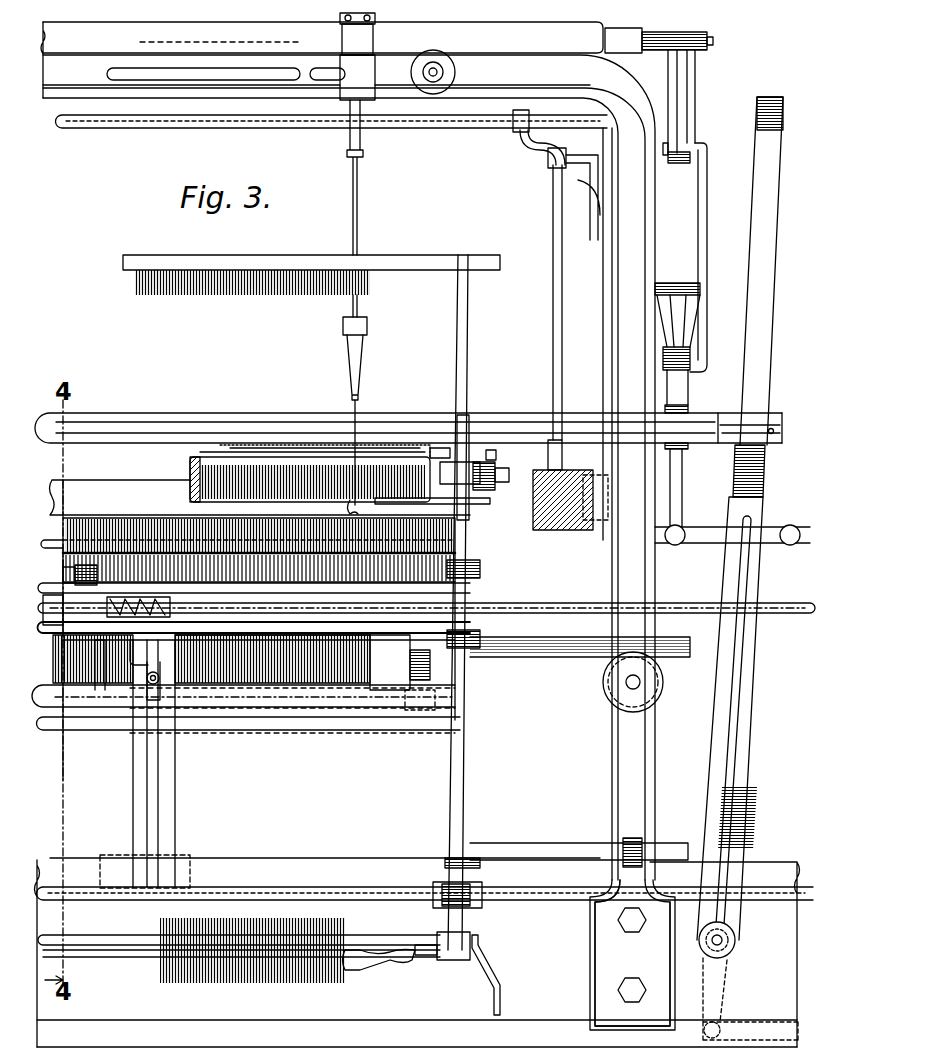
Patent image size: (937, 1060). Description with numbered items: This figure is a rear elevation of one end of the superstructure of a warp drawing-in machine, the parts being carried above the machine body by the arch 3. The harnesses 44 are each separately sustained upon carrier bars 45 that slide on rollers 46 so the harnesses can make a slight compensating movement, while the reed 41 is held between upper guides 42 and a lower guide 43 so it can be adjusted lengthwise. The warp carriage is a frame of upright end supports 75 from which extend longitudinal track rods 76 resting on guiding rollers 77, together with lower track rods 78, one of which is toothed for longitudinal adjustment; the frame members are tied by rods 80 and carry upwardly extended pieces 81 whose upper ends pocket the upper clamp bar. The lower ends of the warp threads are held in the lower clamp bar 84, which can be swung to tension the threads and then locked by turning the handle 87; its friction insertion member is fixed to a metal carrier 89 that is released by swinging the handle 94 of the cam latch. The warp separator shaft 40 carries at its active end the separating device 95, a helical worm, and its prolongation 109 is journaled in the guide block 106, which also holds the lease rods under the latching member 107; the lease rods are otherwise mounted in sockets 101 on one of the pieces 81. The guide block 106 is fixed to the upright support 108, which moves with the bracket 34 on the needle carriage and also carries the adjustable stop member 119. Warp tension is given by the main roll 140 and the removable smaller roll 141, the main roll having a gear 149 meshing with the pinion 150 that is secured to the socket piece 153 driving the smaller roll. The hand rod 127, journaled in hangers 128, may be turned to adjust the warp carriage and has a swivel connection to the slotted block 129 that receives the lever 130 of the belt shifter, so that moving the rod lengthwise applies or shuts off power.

The arch 3 is at (120, 83).
The supporting arm or bracket 34 is at (190, 860).
The warp separator shaft 40 is at (570, 605).
The reed 41 is at (350, 675).
The upper guides 42 is at (290, 605).
The lower guide 43 is at (355, 695).
The harnesses 44 is at (440, 532).
The carrier bars 45 is at (545, 40).
The rollers 46 is at (447, 85).
The upright end supports 75 is at (465, 757).
The longitudinal track rods 76 is at (555, 655).
The guiding rollers 77 is at (665, 680).
The lower track rods 78 is at (550, 845).
The rods 80 is at (297, 730).
The upwardly extended pieces 81 is at (470, 575).
The lower clamp bar 84 is at (365, 940).
The handle 87 is at (500, 1000).
The metal carrier 89 is at (100, 955).
The handle of cam latch 94 is at (360, 965).
The separating device 95 is at (170, 525).
The sockets 101 is at (470, 592).
The guide block 106 is at (97, 690).
The latching member 107 is at (115, 590).
The upright support 108 is at (175, 762).
The prolongation 109 is at (68, 592).
The stop member 119 is at (148, 665).
The hand rod 127 is at (195, 428).
The hangers 128 is at (688, 392).
The block 129 is at (782, 425).
The lever 130 is at (765, 375).
The main roll 140 is at (265, 455).
The smaller roll 141 is at (280, 450).
The gear 149 is at (485, 480).
The pinion 150 is at (480, 440).
The socket piece 153 is at (455, 440).